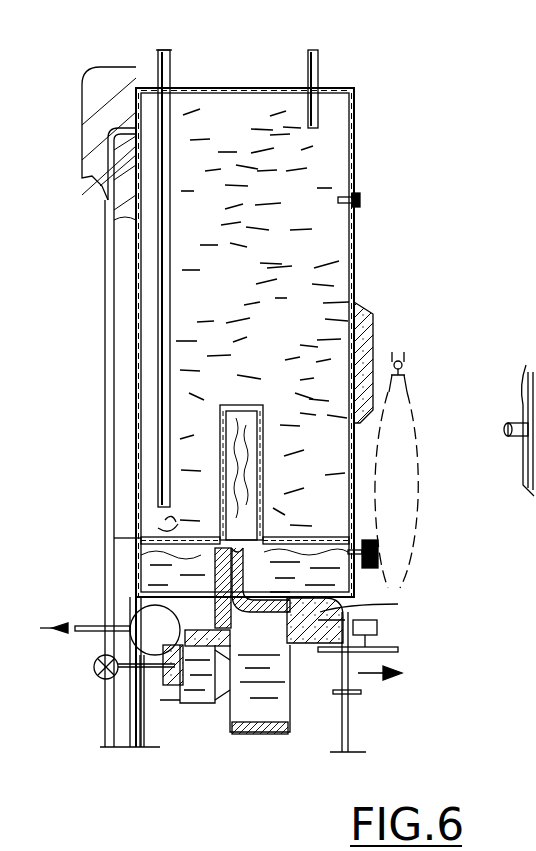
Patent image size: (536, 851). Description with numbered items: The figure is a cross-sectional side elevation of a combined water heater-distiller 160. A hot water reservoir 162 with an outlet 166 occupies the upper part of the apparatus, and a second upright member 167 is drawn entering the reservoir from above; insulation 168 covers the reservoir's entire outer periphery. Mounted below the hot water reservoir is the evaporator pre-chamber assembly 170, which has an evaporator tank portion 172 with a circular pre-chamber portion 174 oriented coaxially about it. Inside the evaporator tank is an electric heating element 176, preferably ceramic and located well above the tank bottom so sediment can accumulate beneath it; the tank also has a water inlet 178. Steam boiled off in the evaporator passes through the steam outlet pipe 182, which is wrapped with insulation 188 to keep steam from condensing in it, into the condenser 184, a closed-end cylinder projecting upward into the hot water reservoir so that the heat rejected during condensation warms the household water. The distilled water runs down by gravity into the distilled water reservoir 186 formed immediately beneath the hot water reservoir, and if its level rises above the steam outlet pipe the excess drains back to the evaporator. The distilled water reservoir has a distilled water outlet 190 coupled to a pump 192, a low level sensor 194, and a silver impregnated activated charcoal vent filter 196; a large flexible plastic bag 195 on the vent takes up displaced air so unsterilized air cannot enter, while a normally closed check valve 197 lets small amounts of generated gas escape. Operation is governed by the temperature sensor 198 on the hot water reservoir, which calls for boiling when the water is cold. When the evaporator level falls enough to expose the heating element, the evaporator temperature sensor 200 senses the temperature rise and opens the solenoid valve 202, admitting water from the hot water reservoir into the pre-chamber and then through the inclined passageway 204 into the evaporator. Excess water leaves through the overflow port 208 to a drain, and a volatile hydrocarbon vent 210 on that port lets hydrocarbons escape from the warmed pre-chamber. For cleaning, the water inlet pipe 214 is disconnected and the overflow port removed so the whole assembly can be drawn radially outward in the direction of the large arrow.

The water heater-distiller 160 is at (380, 102).
The hot water reservoir 162 is at (358, 254).
The outlet 166 is at (318, 62).
The level rod 167 is at (170, 52).
The insulation 168 is at (370, 312).
The evaporator pre-chamber assembly 170 is at (168, 702).
The evaporator tank portion 172 is at (292, 742).
The circular pre-chamber portion 174 is at (155, 745).
The electric heating element 176 is at (350, 739).
The water inlet 178 is at (218, 720).
The steam outlet pipe 182 is at (248, 542).
The condenser 184 is at (264, 480).
The distilled water reservoir 186 is at (300, 615).
The insulation 188 is at (214, 575).
The distilled water outlet 190 is at (135, 585).
The pump 192 is at (132, 618).
The low level sensor 194 is at (136, 538).
The flexible plastic bag 195 is at (418, 418).
The silver impregnated activated charcoal vent filter 196 is at (378, 548).
The check valve 197 is at (401, 358).
The temperature sensor 198 is at (360, 200).
The evaporator temperature sensor 200 is at (352, 610).
The solenoid valve 202 is at (94, 670).
The inclined passageway 204 is at (362, 706).
The overflow port 208 is at (400, 655).
The volatile hydrocarbon vent 210 is at (380, 632).
The pipe 214 is at (140, 688).